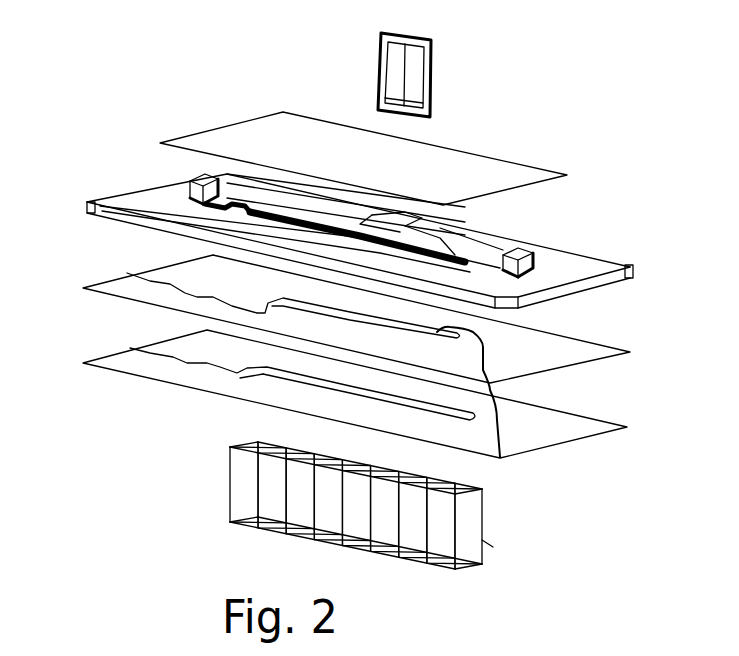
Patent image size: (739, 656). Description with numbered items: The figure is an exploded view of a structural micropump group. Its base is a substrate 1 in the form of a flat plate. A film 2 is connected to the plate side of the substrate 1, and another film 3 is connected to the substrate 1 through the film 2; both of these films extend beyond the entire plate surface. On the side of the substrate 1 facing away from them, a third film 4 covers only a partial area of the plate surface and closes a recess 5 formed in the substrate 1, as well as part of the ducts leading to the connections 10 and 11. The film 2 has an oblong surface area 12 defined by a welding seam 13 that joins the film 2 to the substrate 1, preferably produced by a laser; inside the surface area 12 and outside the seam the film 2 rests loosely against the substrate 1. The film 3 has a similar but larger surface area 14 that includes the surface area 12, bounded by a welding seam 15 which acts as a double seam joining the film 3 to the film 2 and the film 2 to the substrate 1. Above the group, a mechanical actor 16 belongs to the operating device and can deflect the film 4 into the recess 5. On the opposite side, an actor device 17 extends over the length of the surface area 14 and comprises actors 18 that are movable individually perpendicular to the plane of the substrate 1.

The substrate 1 is at (573, 267).
The film 2 is at (593, 351).
The film 3 is at (587, 430).
The third film 4 is at (513, 172).
The recess 5 is at (418, 232).
The connection 10 is at (190, 185).
The connection 11 is at (527, 257).
The oblong surface area 12 is at (500, 457).
The welding seam 13 is at (127, 273).
The surface area 14 is at (263, 374).
The welding seam 15 is at (130, 348).
The mechanical actor 16 is at (434, 63).
The actor device 17 is at (493, 547).
The actors 18 is at (243, 496).